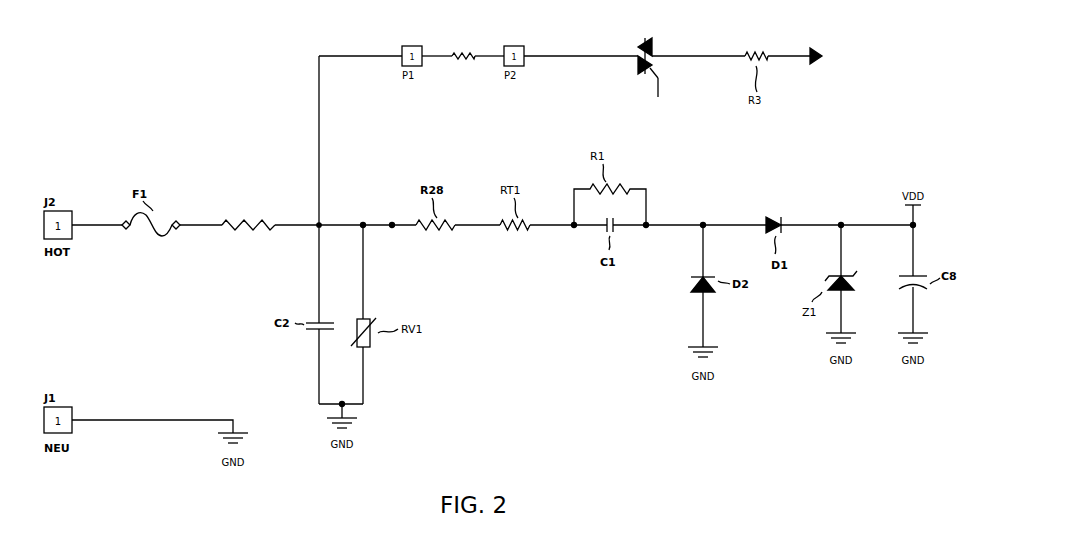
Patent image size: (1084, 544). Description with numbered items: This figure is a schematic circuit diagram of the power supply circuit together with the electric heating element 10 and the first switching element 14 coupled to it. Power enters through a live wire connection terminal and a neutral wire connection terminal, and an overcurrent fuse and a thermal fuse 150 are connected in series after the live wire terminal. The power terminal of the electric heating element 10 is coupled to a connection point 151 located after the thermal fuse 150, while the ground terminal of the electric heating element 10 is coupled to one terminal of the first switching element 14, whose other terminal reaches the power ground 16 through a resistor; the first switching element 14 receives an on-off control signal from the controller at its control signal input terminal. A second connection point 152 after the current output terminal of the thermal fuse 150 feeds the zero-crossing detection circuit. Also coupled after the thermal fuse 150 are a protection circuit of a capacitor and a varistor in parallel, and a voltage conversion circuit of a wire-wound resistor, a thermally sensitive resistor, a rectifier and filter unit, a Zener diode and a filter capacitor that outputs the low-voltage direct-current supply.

The electric heating element 10 is at (461, 64).
The first switching element 14 is at (632, 68).
The power ground 16 is at (812, 68).
The thermal fuse 150 is at (243, 214).
The connection point 151 is at (316, 221).
The connection point 152 is at (391, 222).